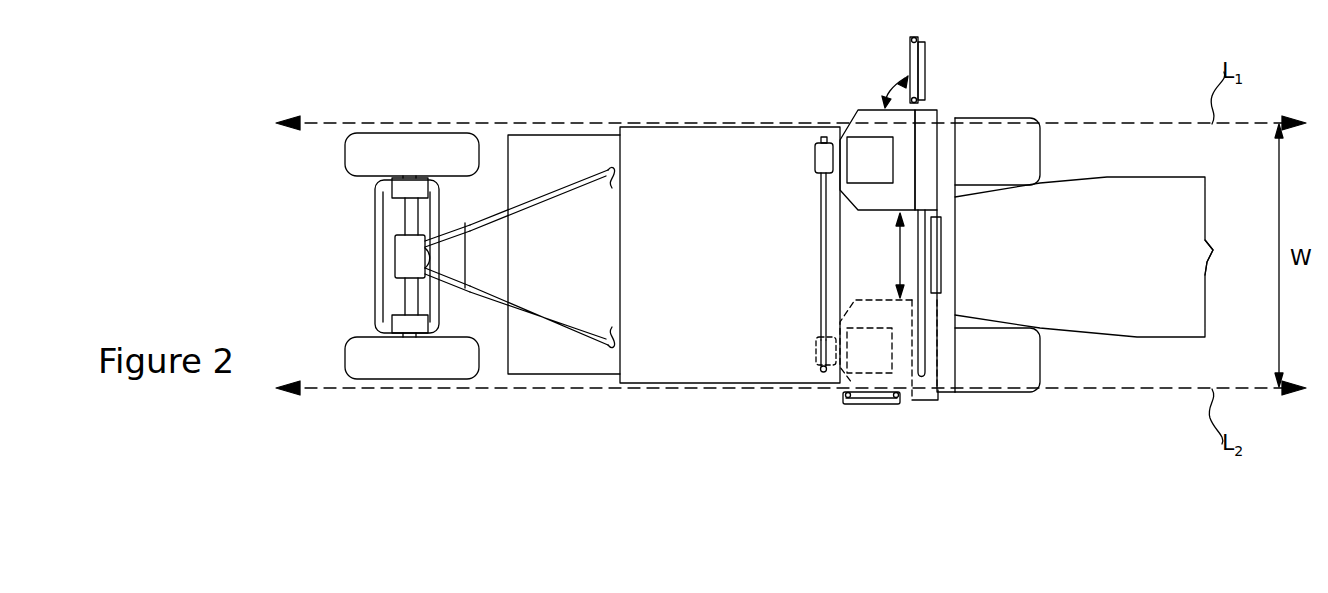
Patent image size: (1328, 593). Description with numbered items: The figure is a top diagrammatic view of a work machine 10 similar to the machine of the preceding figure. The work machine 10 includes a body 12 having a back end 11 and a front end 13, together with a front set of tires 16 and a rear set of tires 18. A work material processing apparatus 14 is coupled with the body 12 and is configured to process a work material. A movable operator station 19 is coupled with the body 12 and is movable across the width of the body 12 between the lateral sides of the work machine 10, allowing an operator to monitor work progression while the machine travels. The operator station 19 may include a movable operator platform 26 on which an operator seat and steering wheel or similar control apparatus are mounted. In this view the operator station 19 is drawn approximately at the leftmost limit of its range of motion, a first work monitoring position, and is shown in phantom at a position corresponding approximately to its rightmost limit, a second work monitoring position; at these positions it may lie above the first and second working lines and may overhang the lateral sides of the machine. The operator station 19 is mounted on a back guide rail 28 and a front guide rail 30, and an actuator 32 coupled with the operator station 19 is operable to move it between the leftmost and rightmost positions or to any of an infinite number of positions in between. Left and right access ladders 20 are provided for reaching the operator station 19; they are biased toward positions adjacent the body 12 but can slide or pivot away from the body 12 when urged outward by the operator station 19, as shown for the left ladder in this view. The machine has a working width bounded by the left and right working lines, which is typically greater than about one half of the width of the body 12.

The work machine 10 is at (355, 102).
The back end 11 is at (355, 250).
The body 12 is at (1118, 300).
The front end 13 is at (1222, 291).
The work material processing apparatus 14 is at (544, 375).
The front set of tires 16 is at (1010, 375).
The rear set of tires 18 is at (438, 375).
The movable operator station 19 is at (852, 92).
The access ladder 20 is at (925, 90).
The movable operator platform 26 is at (868, 128).
The back guide rail 28 is at (822, 274).
The front guide rail 30 is at (926, 378).
The actuator 32 is at (940, 250).